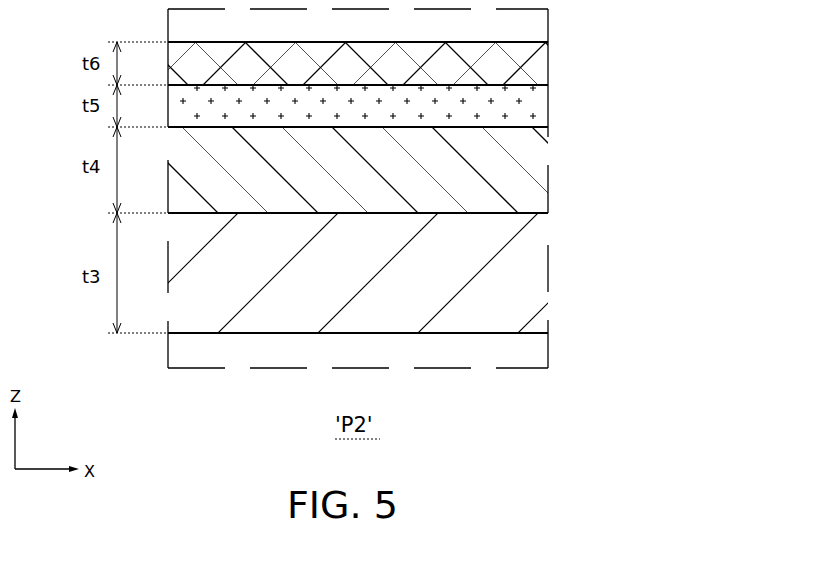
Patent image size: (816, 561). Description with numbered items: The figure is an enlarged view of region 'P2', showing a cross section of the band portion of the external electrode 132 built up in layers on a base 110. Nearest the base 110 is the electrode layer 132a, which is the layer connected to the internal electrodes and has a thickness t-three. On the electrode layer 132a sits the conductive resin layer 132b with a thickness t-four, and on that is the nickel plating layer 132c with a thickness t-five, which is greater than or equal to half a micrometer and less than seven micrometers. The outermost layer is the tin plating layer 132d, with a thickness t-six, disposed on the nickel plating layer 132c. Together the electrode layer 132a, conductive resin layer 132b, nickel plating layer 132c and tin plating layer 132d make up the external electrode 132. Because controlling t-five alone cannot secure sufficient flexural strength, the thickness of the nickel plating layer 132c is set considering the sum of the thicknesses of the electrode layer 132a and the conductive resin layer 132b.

The substrate 110 is at (538, 353).
The external electrode 132 is at (366, 187).
The electrode layer 132a is at (335, 273).
The conductive resin layer 132b is at (540, 170).
The nickel (Ni) plating layer 132c is at (538, 104).
The tin (Sn) plating layer 132d is at (538, 63).